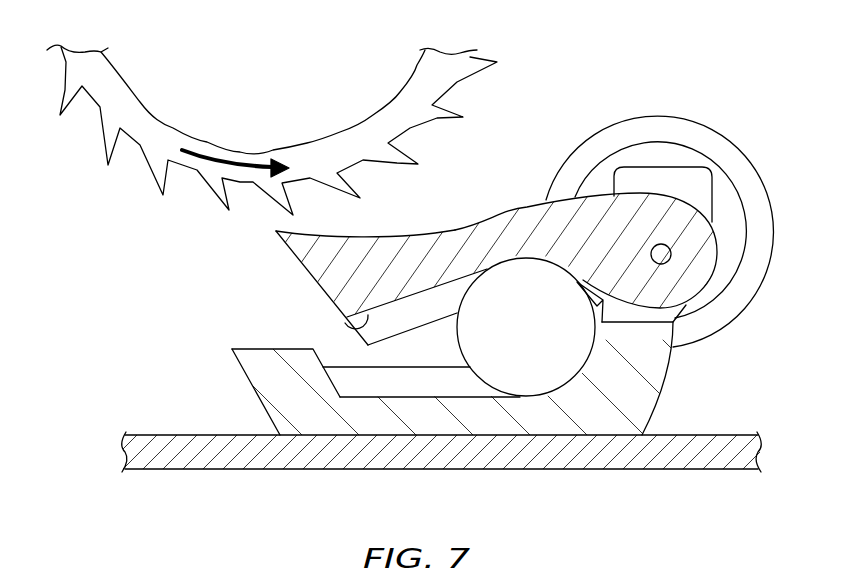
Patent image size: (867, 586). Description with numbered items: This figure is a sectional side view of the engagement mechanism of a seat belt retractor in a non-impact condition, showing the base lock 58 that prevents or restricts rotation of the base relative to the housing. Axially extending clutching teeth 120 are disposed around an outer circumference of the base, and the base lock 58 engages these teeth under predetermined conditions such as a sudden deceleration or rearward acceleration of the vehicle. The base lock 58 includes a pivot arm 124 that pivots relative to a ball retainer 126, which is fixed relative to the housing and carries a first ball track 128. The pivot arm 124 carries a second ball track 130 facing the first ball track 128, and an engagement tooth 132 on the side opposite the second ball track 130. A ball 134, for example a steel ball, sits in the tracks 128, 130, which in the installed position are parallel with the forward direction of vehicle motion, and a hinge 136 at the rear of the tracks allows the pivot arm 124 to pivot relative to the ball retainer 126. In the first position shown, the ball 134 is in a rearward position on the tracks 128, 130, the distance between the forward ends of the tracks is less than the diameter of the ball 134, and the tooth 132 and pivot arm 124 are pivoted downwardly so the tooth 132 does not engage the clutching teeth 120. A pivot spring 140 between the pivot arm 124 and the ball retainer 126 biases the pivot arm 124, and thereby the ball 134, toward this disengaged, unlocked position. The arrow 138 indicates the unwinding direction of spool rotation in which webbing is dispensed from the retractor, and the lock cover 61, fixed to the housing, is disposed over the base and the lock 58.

The base lock 58 is at (663, 57).
The lock cover 61 is at (696, 470).
The clutching teeth 120 is at (229, 211).
The pivot arm 124 is at (507, 214).
The ball retainer 126 is at (258, 404).
The first ball track 128 is at (352, 397).
The second ball track 130 is at (347, 323).
The engagement tooth 132 is at (270, 231).
The ball 134 is at (588, 362).
The hinge 136 is at (671, 255).
The arrow 138 is at (224, 158).
The pivot spring 140 is at (738, 147).